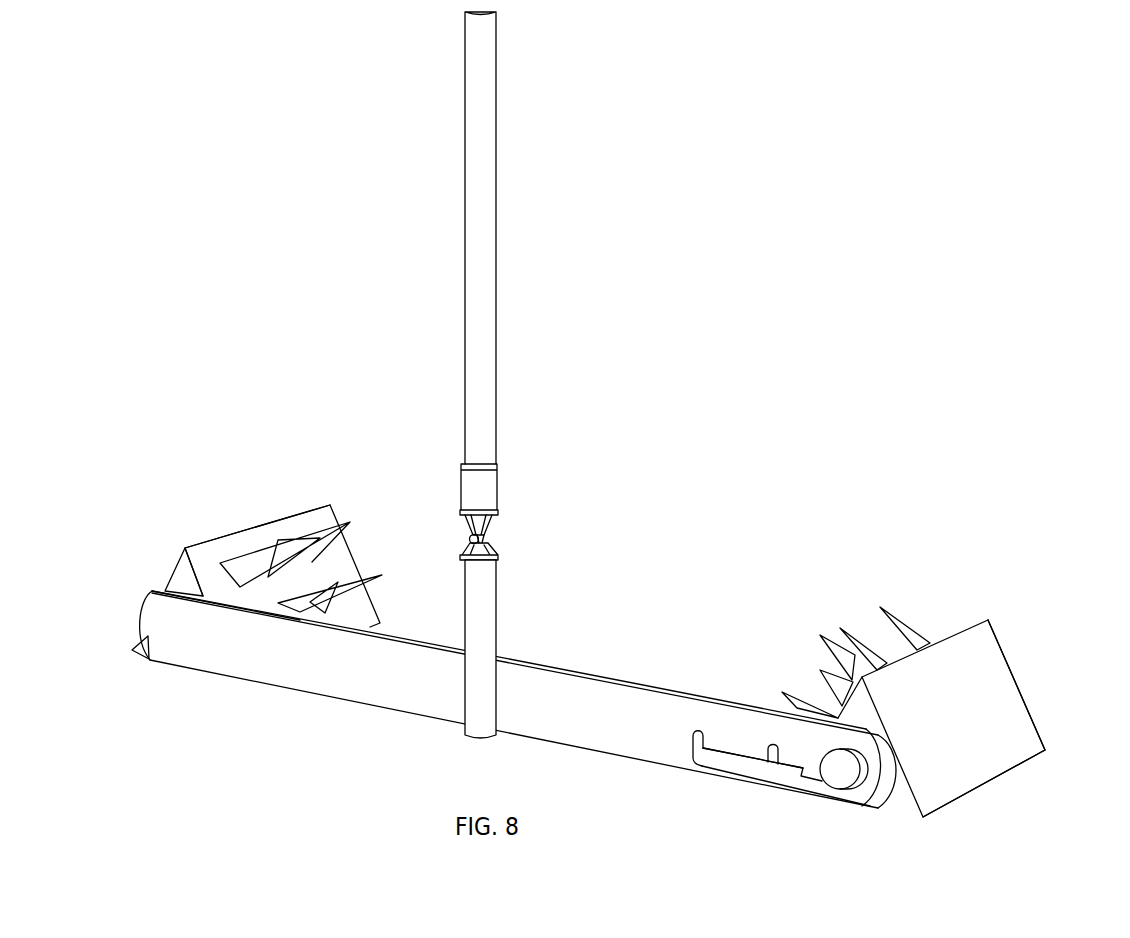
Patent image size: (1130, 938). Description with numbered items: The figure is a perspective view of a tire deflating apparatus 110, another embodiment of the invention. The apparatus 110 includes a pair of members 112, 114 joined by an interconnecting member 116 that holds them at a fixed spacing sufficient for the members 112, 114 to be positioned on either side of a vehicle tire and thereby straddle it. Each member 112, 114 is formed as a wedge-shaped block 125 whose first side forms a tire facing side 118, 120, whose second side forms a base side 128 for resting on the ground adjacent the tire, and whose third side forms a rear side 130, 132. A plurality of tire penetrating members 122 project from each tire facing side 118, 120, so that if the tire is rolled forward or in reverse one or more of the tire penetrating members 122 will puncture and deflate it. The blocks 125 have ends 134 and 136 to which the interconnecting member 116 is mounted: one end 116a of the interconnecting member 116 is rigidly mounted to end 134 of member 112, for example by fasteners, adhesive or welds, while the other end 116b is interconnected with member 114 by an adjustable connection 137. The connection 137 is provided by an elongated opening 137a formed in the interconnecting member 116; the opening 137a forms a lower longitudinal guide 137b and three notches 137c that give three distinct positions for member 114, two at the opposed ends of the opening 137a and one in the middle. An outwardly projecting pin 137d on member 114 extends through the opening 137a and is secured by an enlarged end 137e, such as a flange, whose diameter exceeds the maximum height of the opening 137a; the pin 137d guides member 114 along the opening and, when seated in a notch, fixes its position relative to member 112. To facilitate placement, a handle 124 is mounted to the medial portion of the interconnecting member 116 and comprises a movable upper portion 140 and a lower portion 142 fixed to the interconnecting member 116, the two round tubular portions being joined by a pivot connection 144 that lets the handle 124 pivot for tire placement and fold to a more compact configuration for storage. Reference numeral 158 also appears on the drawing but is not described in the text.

The tire deflating apparatus 110 is at (724, 242).
The member 112 is at (306, 495).
The member 114 is at (997, 640).
The interconnecting member 116 is at (598, 676).
The end of interconnecting member 116a is at (192, 648).
The end of interconnecting member 116b is at (780, 788).
The tire facing side 118 is at (258, 536).
The tire facing side 120 is at (953, 628).
The tire penetrating members 122 is at (382, 574).
The handle 124 is at (490, 208).
The wedge-shaped block 125 is at (212, 545).
The base side 128 is at (947, 803).
The rear side 130 is at (173, 582).
The rear side 132 is at (992, 690).
The end of block 134 is at (167, 586).
The end of block 136 is at (893, 813).
The adjustable connection 137 is at (721, 786).
The elongated opening 137a is at (692, 762).
The lower longitudinal guide 137b is at (763, 778).
The notches 137c is at (771, 743).
The pin 137d is at (822, 796).
The enlarged end 137e is at (855, 796).
The upper portion 140 is at (491, 372).
The lower portion 142 is at (468, 598).
The pivot connection 144 is at (469, 537).
The coupling sleeve 158 is at (497, 465).